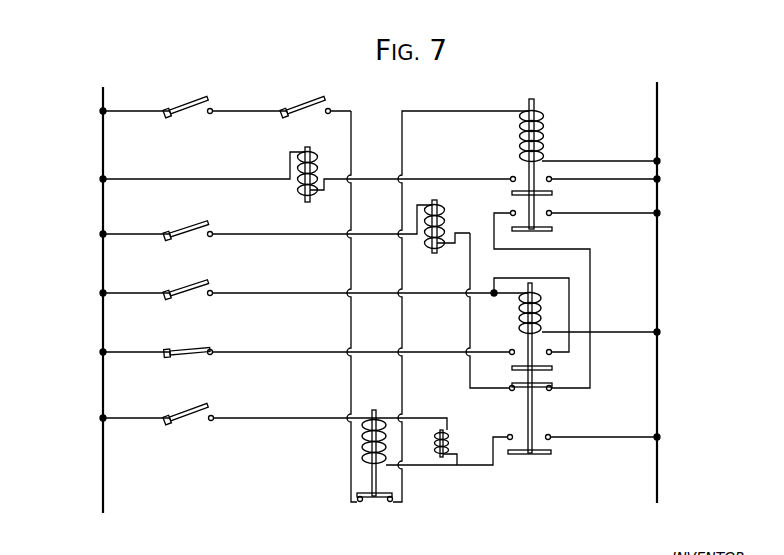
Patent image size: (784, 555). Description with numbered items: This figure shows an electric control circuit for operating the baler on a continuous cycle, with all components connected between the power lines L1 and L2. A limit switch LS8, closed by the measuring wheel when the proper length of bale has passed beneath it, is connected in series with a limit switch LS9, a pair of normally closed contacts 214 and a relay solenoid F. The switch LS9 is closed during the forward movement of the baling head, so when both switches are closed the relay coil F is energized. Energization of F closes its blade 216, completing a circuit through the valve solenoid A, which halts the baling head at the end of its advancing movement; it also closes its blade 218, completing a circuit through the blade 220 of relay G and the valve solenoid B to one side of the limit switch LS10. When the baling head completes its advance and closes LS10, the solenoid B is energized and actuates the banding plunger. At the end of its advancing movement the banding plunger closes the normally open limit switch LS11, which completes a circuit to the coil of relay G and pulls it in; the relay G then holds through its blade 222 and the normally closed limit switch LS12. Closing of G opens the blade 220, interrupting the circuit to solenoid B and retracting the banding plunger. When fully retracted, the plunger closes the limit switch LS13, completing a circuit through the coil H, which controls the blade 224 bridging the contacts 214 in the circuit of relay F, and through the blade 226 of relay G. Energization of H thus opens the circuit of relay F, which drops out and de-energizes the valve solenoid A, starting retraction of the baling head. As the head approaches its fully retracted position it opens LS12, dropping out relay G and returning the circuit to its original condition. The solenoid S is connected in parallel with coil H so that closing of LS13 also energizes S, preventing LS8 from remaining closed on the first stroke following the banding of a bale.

The power line L1 is at (86, 296).
The power line L2 is at (679, 290).
The limit switch LS8 is at (188, 100).
The limit switch LS9 is at (298, 102).
The limit switch LS10 is at (228, 208).
The limit switch LS11 is at (216, 265).
The limit switch LS12 is at (206, 348).
The limit switch LS13 is at (198, 409).
The valve solenoid A is at (312, 170).
The valve solenoid B is at (440, 222).
The relay solenoid F is at (540, 130).
The relay G is at (545, 302).
The coil H is at (362, 440).
The solenoid S is at (470, 427).
The blade 216 is at (552, 194).
The blade 218 is at (552, 230).
The blade 220 is at (552, 385).
The blade 222 is at (552, 368).
The blade 226 is at (530, 455).
The blade 224 is at (350, 487).
The normally closed contacts 214 is at (372, 500).